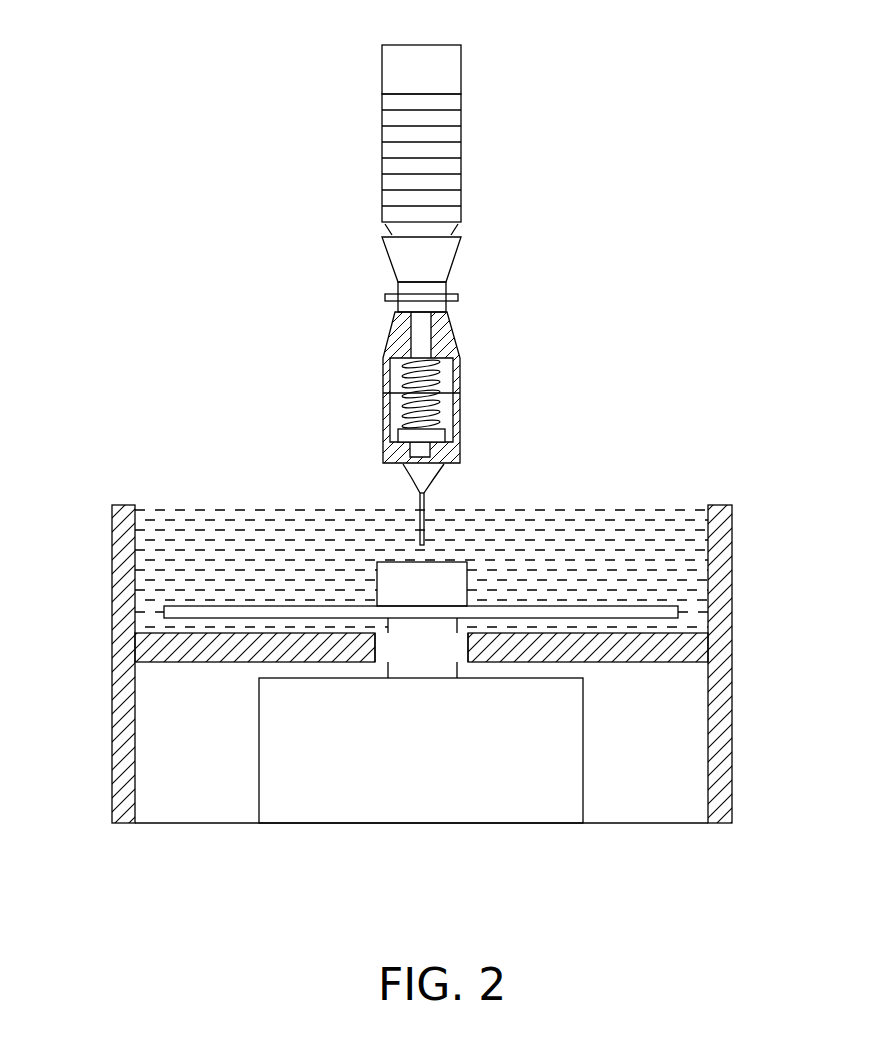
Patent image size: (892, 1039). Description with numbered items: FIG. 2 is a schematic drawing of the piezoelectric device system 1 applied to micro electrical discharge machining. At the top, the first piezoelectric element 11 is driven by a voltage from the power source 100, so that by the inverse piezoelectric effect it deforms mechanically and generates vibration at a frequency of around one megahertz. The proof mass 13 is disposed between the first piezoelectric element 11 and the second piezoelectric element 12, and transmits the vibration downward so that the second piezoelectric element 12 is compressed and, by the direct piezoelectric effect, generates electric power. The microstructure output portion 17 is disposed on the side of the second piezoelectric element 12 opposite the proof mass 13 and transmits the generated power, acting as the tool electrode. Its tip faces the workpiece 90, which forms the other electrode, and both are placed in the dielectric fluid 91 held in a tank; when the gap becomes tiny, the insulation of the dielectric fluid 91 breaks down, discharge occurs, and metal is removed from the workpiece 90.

The piezoelectric device system 1 is at (322, 147).
The power source 100 is at (453, 72).
The first piezoelectric element 11 is at (455, 148).
The proof mass 13 is at (457, 252).
The second piezoelectric element 12 is at (440, 287).
The microstructure output portion 17 is at (424, 480).
The workpiece 90 is at (388, 560).
The dielectric fluid 91 is at (628, 527).